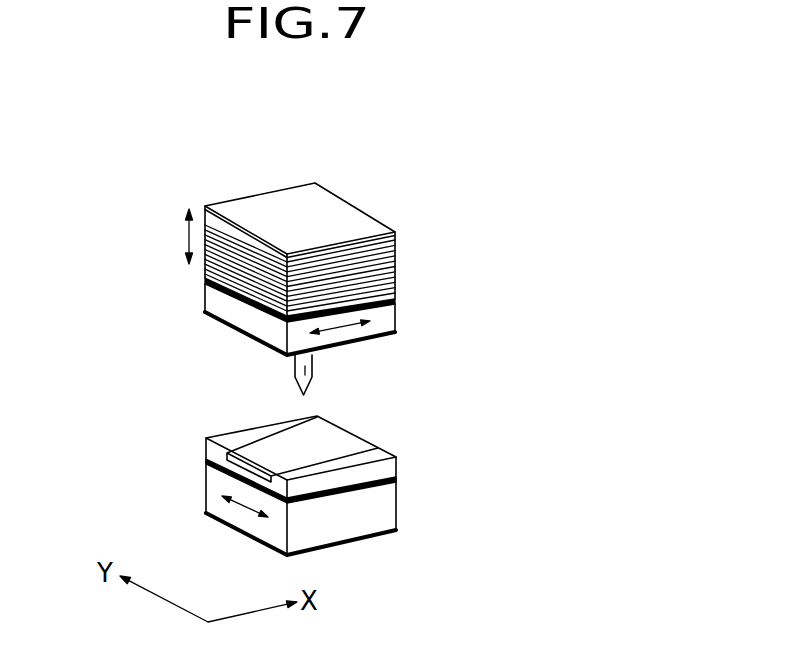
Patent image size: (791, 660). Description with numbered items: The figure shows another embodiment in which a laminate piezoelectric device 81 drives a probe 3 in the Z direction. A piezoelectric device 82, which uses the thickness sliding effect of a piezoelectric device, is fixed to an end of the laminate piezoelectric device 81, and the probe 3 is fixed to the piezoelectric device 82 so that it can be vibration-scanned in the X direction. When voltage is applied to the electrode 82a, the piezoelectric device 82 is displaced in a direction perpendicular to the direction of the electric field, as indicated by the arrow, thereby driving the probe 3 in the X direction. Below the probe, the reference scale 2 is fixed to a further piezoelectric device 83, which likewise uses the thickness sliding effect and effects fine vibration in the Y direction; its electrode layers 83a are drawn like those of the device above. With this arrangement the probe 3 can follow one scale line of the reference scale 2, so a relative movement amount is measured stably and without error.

The laminate piezoelectric device 81 is at (418, 230).
The piezoelectric device 82 is at (298, 316).
The electrode 82a is at (205, 278).
The probe 3 is at (306, 371).
The reference scale 2 is at (332, 437).
The piezoelectric device 83 is at (298, 485).
The electrode layers of Y-direction actuator 83a is at (205, 462).